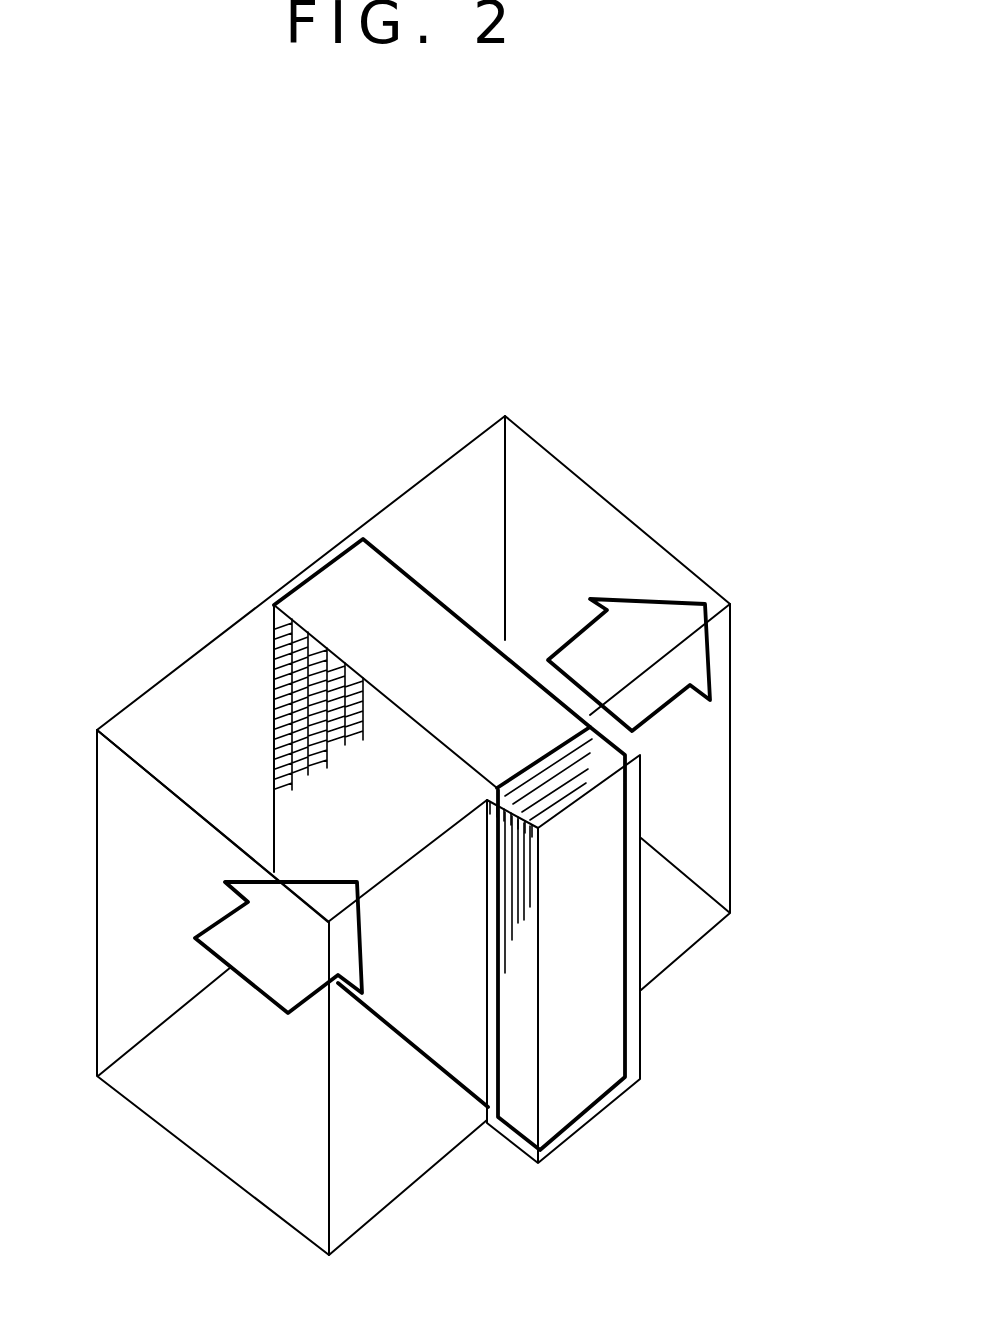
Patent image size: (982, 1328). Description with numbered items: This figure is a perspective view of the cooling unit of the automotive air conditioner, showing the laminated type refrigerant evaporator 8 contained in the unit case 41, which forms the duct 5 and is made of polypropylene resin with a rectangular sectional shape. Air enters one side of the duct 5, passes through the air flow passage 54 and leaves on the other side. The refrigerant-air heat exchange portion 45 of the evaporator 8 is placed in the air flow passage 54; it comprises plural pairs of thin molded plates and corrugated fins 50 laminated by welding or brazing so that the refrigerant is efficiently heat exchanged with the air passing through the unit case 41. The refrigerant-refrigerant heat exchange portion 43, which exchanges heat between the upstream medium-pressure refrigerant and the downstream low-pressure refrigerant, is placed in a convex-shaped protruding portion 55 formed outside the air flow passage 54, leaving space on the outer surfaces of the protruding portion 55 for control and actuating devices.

The duct 5 is at (396, 728).
The laminated type refrigerant evaporator 8 is at (383, 705).
The unit case 41 is at (203, 647).
The refrigerant-refrigerant heat exchange portion 43 is at (578, 772).
The refrigerant-air heat exchange portion 45 is at (330, 592).
The corrugated fins 50 is at (273, 677).
The air flow passage 54 is at (223, 1110).
The protruding portion 55 is at (656, 945).